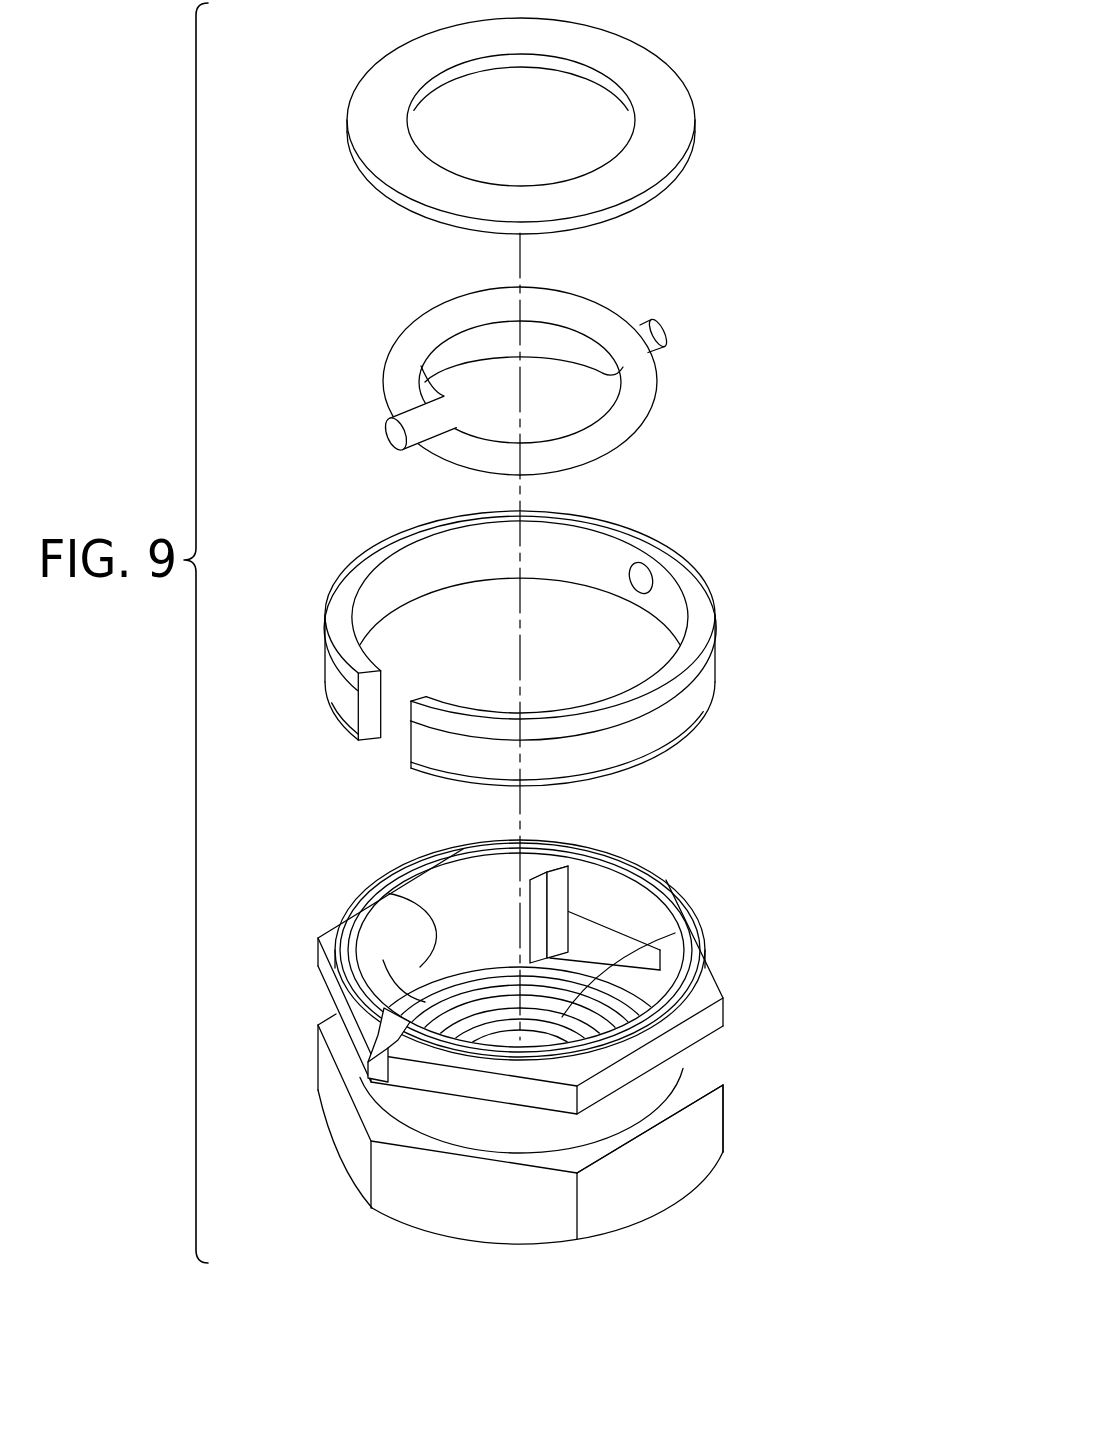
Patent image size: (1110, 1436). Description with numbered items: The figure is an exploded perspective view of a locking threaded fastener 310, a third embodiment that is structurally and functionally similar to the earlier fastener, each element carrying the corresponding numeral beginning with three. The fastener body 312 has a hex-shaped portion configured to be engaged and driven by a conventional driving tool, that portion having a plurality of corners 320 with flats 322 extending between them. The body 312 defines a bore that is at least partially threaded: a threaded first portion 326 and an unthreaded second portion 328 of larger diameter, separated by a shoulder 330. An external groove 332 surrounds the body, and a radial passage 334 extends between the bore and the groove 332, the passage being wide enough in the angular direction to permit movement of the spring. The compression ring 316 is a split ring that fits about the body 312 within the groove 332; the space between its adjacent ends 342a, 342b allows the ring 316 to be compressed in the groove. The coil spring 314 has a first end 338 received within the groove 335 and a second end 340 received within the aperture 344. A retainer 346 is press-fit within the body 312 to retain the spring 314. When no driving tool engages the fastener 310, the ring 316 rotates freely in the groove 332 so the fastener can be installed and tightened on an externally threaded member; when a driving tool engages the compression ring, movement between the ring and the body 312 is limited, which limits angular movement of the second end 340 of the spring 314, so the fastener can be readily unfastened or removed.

The locking threaded fastener 310 is at (798, 158).
The fastener body 312 is at (723, 967).
The spring 314 is at (662, 409).
The compression ring 316 is at (721, 606).
The corners 320 is at (724, 1123).
The flats 322 is at (682, 1160).
The first portion 326 is at (563, 1012).
The second portion 328 is at (440, 930).
The shoulder 330 is at (420, 993).
The groove 332 is at (702, 1078).
The radial passage 334 is at (575, 887).
The groove 335 is at (372, 1060).
The first end 338 is at (385, 415).
The second end 340 is at (655, 328).
The first end 342a is at (362, 736).
The second end 342b is at (406, 748).
The aperture 344 is at (648, 575).
The retainer 346 is at (663, 53).